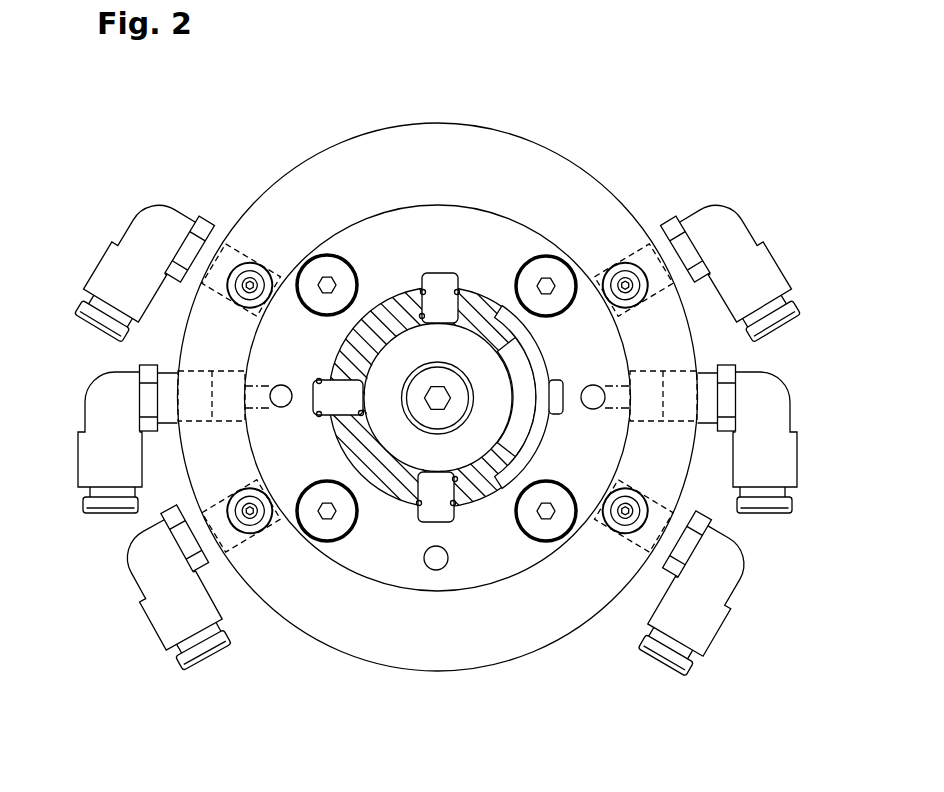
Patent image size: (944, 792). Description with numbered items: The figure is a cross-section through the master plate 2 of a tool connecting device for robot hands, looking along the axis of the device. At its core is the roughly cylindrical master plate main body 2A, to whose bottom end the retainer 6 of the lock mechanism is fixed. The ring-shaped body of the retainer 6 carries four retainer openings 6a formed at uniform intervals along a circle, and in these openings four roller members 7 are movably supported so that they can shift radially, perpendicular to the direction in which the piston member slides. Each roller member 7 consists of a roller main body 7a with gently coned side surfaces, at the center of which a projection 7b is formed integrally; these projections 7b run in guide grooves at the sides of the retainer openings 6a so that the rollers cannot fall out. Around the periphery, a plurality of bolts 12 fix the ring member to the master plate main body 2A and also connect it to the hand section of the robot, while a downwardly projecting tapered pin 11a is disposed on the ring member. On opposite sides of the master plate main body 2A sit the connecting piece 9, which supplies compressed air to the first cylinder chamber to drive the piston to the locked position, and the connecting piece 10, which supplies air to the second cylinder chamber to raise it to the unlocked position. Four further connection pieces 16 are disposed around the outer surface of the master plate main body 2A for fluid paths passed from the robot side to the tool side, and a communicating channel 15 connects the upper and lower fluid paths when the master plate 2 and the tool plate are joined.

The master plate 2 is at (318, 141).
The master plate main body 2A is at (395, 147).
The retainer 6 is at (373, 307).
The retainer openings 6a is at (421, 318).
The roller members 7 is at (471, 210).
The roller main body 7a is at (438, 274).
The projection 7b is at (420, 290).
The connecting piece 9 is at (777, 408).
The connecting piece 10 is at (100, 408).
The tapered pin 11a is at (442, 568).
The bolts 12 is at (313, 270).
The communicating channel 15 is at (625, 283).
The connection pieces 16 is at (140, 222).